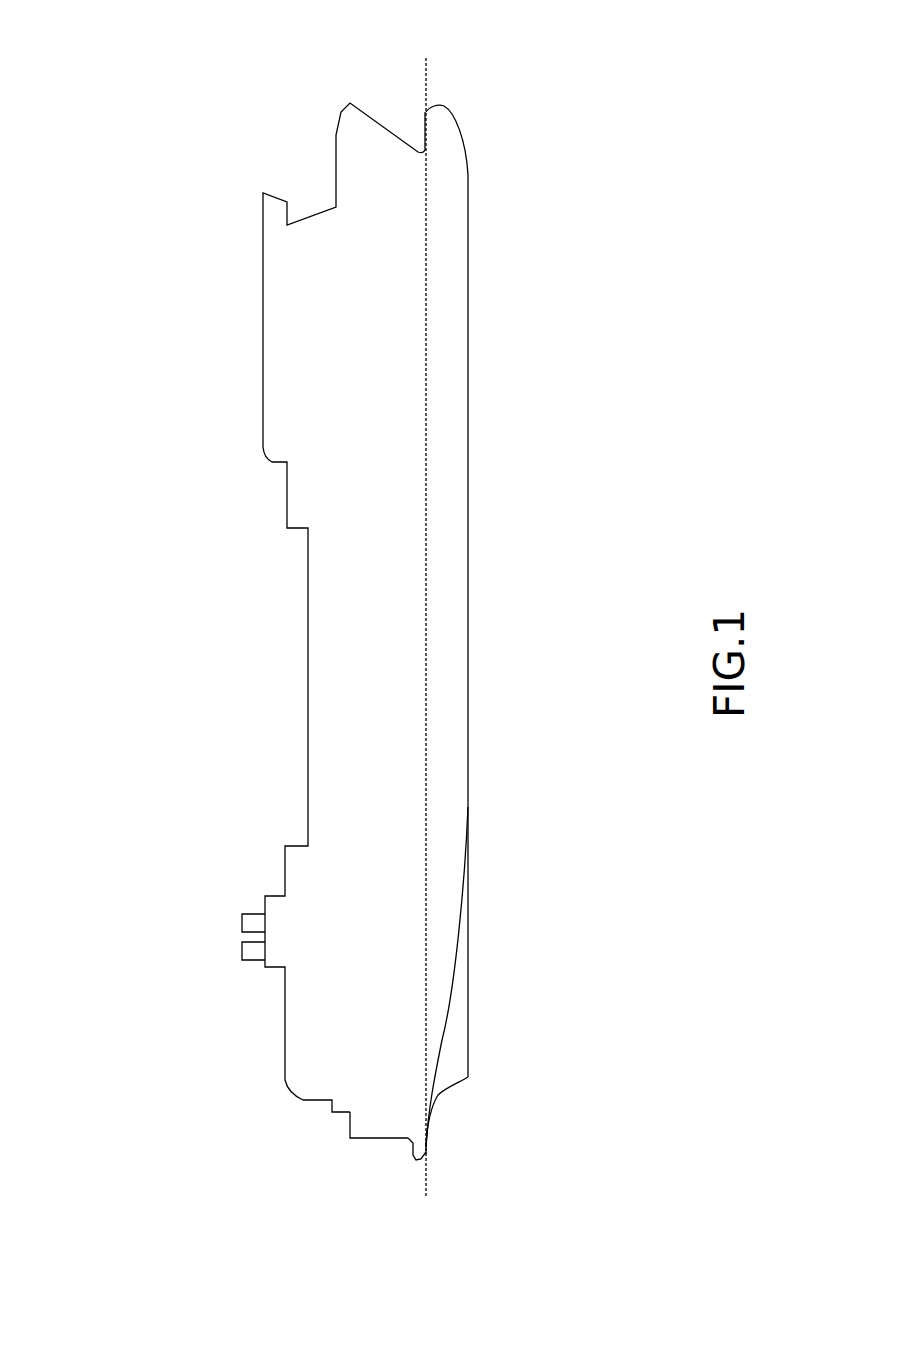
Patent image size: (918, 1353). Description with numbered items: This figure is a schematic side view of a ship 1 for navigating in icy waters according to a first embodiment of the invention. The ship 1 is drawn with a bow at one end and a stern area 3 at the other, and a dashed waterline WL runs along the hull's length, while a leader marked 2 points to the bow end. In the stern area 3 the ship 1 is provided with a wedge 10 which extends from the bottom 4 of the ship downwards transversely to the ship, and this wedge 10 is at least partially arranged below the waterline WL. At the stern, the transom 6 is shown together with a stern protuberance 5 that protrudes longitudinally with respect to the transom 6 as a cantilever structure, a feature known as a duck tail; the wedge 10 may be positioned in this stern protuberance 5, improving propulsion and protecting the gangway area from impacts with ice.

The ship 1 is at (198, 702).
The bow 2 is at (462, 95).
The stern area 3 is at (452, 1174).
The bottom 4 is at (445, 1028).
The stern protuberance 5 is at (414, 1157).
The transom 6 is at (372, 1139).
The wedge 10 is at (433, 1150).
The waterline WL is at (425, 73).